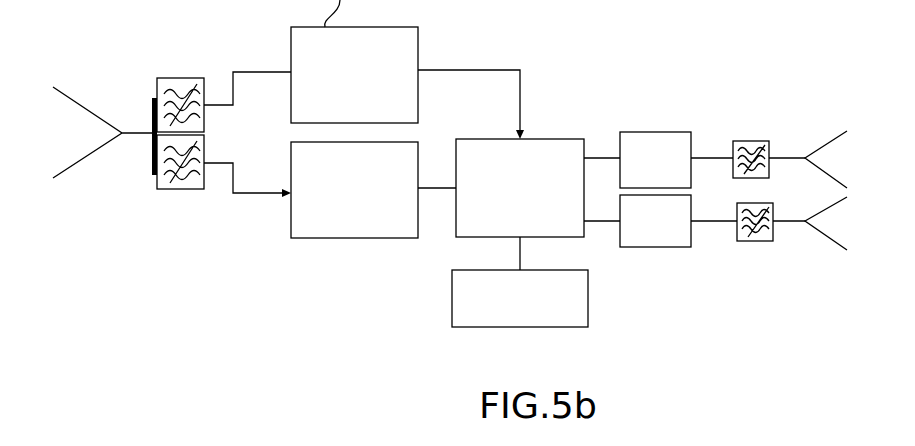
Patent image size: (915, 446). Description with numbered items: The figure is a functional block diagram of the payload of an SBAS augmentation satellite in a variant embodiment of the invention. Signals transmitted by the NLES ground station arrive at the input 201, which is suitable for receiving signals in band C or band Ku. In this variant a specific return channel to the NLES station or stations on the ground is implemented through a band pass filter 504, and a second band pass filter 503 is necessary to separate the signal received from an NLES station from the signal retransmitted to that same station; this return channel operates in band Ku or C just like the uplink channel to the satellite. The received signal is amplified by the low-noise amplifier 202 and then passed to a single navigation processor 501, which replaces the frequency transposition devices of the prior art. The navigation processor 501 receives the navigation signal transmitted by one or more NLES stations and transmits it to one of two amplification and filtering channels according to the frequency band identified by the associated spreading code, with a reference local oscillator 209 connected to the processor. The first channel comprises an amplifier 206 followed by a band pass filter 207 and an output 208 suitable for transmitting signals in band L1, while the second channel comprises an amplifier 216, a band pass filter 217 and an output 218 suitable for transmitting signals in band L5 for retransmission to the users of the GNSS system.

The input 201 is at (75, 166).
The band pass filter 504 is at (180, 78).
The second band pass filter 503 is at (175, 189).
The low-noise amplifier 202 is at (333, 238).
The navigation processor 501 is at (540, 201).
The reference local oscillator 209 is at (512, 327).
The amplifier 206 is at (648, 132).
The amplifier 216 is at (650, 247).
The band pass filter 207 is at (750, 141).
The band pass filter 217 is at (755, 241).
The output 208 is at (833, 143).
The output 218 is at (833, 207).